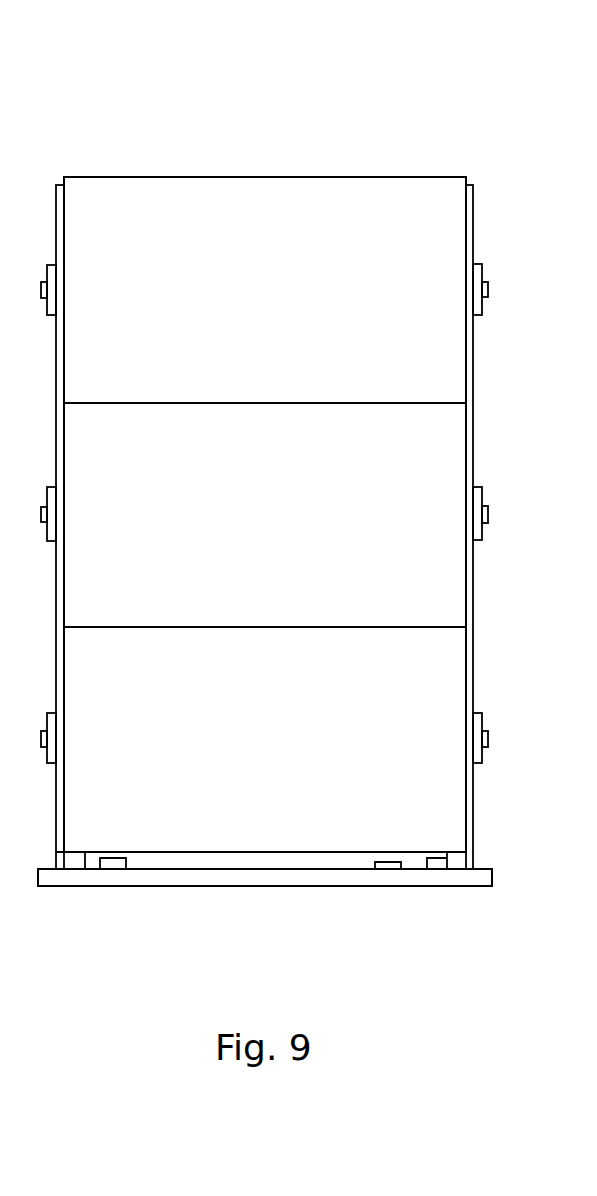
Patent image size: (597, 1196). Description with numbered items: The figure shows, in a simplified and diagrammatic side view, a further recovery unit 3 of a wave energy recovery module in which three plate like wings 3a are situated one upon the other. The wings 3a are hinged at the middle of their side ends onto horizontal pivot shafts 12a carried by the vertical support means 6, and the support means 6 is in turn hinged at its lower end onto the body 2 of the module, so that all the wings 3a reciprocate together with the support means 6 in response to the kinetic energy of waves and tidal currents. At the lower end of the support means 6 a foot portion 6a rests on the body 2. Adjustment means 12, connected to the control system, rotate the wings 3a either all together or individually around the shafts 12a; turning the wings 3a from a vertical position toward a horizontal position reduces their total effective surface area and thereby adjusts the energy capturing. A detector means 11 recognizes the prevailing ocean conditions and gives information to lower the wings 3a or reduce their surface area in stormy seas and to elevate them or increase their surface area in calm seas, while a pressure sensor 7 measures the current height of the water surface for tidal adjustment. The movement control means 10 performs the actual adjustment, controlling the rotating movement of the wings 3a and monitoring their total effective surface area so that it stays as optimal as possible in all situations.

The body 2 is at (465, 882).
The recovery unit 3 is at (447, 72).
The wing 3a is at (213, 181).
The vertical support means 6 is at (60, 353).
The foot of side panel 6a is at (465, 861).
The pressure sensor 7 is at (108, 860).
The movement control means 10 is at (388, 862).
The detector means 11 is at (437, 858).
The adjustment means 12 is at (483, 270).
The pivot shaft 12a is at (488, 292).